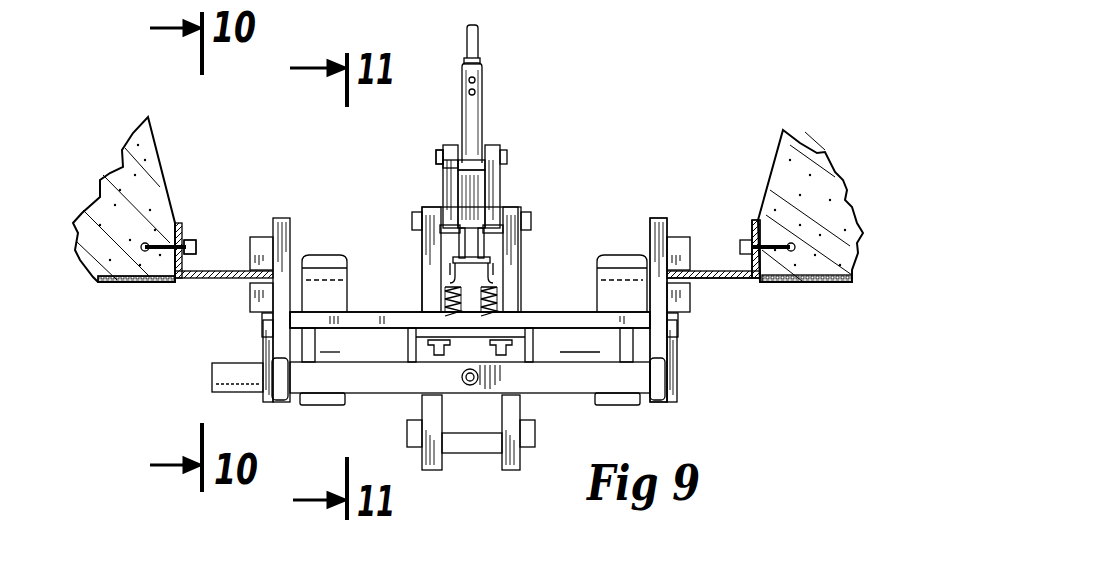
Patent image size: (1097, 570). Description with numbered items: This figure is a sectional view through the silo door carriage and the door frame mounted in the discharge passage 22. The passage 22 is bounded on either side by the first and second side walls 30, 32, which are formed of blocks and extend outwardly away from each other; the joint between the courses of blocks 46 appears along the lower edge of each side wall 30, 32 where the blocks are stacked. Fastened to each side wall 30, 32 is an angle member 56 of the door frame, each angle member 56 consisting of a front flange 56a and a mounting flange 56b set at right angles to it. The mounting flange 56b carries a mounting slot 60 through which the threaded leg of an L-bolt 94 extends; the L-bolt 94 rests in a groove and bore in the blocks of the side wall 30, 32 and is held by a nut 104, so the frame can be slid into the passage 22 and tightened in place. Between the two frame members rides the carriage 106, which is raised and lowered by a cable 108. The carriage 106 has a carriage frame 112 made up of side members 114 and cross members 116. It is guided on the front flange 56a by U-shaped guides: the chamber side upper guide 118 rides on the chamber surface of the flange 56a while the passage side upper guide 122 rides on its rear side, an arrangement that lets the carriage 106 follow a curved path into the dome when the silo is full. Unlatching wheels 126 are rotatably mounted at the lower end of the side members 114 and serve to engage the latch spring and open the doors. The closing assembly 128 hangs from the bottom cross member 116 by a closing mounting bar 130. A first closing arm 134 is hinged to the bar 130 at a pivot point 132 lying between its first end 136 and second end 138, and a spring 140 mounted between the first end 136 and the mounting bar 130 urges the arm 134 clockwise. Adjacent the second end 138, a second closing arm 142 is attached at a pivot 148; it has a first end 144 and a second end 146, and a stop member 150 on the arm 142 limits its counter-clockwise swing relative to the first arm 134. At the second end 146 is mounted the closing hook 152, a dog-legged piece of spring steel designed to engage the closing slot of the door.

The discharge passage 22 is at (578, 208).
The first side wall 30 is at (158, 152).
The second side wall 32 is at (783, 142).
The mortar joint 46 is at (110, 284).
The angle member 56 is at (770, 290).
The front flange 56a is at (222, 279).
The mounting flange 56b is at (753, 232).
The mounting slot 60 is at (185, 242).
The L-bolt 94 is at (153, 276).
The nut 104 is at (215, 233).
The carriage 106 is at (630, 108).
The cable 108 is at (479, 377).
The carriage frame 112 is at (658, 200).
The side member 114 is at (290, 205).
The cross member 116 is at (395, 285).
The chamber side upper guide 118 is at (252, 308).
The passage side upper guide 122 is at (261, 237).
The unlatching wheel 126 is at (325, 257).
The closing assembly 128 is at (355, 208).
The closing mounting bar 130 is at (518, 258).
The pivot point 132 is at (432, 210).
The first closing arm 134 is at (510, 168).
The first end 136 is at (462, 250).
The second end 138 is at (492, 143).
The spring 140 is at (497, 300).
The second closing arm 142 is at (495, 92).
The first end 144 is at (455, 145).
The second end 146 is at (483, 68).
The pivot 148 is at (443, 150).
The stop member 150 is at (443, 165).
The closing hook 152 is at (480, 30).